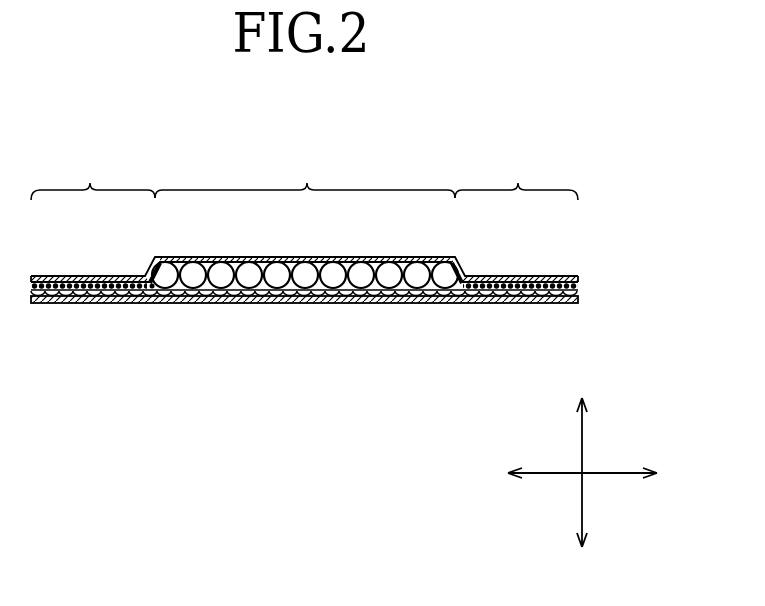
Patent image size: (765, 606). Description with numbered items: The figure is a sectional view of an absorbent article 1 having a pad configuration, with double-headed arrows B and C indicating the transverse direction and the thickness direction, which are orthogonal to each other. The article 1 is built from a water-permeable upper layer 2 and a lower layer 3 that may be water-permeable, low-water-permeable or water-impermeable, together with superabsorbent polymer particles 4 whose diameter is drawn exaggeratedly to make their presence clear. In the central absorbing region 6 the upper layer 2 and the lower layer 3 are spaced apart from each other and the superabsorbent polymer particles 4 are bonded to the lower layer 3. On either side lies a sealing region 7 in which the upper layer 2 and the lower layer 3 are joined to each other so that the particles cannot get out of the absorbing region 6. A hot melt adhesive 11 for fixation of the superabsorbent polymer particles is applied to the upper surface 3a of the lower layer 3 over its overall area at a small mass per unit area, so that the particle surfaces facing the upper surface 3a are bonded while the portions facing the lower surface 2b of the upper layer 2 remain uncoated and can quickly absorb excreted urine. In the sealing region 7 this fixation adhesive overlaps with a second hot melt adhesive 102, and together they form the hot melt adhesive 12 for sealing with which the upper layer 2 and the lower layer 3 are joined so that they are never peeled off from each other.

The absorbent article 1 is at (370, 268).
The upper layer 2 is at (439, 258).
The lower surface of the upper layer 2b is at (352, 267).
The lower layer 3 is at (304, 329).
The upper surface of the lower layer 3a is at (192, 292).
The superabsorbent polymer particles 4 is at (165, 274).
The absorbing region 6 is at (307, 183).
The sealing region 7 is at (90, 183).
The hot melt adhesive for fixation of the superabsorbent polymer particles 11 is at (368, 298).
The hot melt adhesive for sealing 12 is at (370, 308).
The second hot melt adhesive 102 is at (563, 283).
The transverse direction B is at (614, 474).
The thickness direction C is at (584, 441).